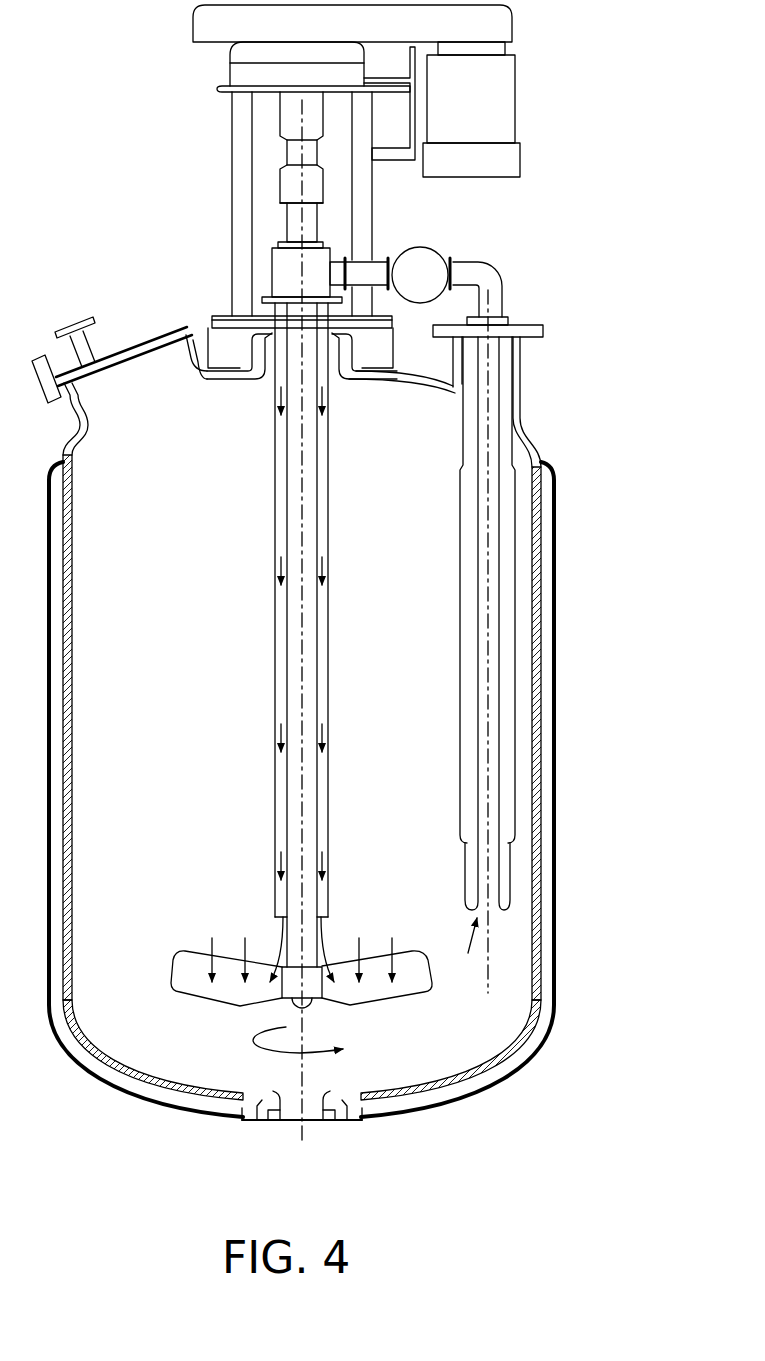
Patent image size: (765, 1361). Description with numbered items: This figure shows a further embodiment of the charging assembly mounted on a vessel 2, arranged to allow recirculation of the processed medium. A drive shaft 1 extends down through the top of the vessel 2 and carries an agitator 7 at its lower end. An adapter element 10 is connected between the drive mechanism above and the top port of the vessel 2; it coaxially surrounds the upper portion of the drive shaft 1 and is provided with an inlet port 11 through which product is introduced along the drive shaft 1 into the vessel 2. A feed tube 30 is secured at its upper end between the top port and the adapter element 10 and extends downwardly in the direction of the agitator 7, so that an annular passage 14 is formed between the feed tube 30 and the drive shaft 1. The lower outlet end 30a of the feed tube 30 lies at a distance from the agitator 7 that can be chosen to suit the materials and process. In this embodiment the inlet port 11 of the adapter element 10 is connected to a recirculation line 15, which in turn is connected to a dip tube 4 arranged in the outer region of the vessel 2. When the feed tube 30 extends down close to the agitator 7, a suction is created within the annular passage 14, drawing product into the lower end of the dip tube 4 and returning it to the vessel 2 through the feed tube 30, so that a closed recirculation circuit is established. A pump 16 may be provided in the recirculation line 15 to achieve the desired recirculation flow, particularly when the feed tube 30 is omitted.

The drive shaft 1 is at (298, 600).
The vessel 2 is at (555, 903).
The dip tube 4 is at (510, 705).
The agitator 7 is at (415, 985).
The adapter element 10 is at (250, 266).
The inlet port 11 is at (347, 278).
The annular passage 14 is at (284, 776).
The recirculation line 15 is at (495, 290).
The pump 16 is at (425, 268).
The feed tube 30 is at (330, 778).
The lower outlet end 30a is at (322, 916).